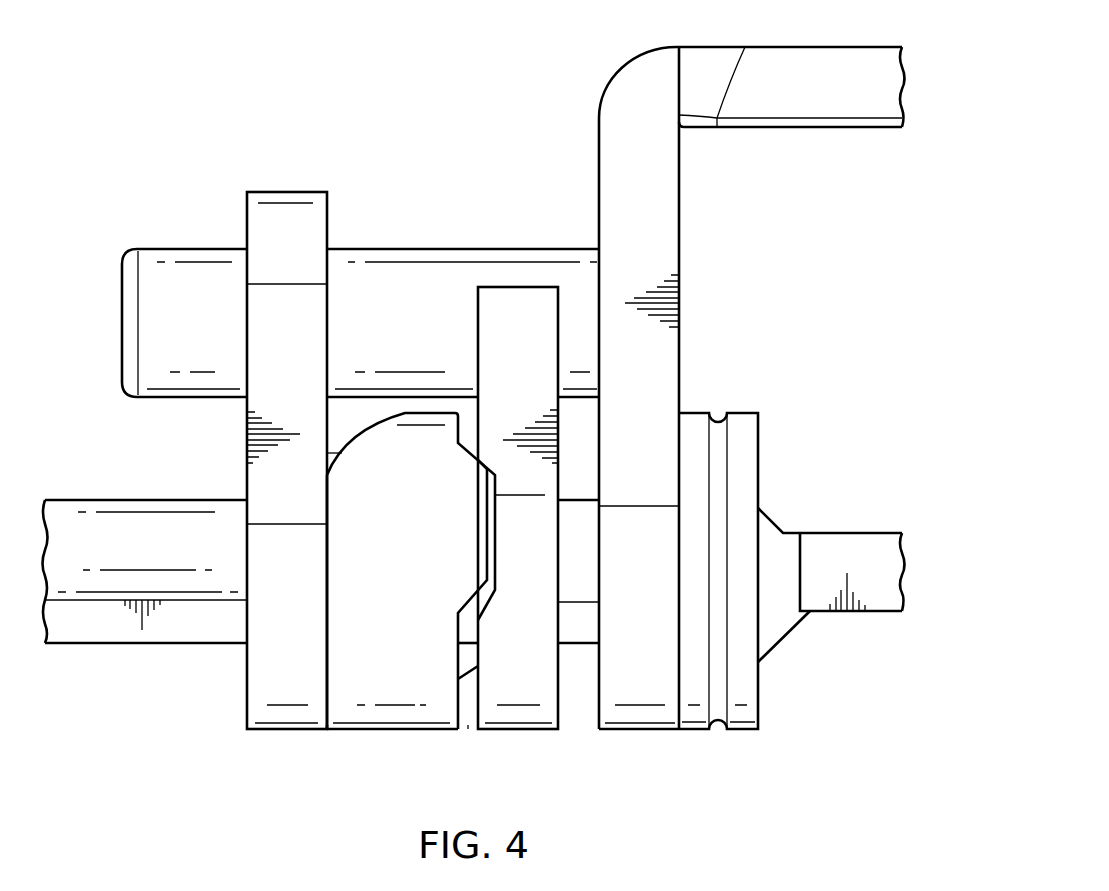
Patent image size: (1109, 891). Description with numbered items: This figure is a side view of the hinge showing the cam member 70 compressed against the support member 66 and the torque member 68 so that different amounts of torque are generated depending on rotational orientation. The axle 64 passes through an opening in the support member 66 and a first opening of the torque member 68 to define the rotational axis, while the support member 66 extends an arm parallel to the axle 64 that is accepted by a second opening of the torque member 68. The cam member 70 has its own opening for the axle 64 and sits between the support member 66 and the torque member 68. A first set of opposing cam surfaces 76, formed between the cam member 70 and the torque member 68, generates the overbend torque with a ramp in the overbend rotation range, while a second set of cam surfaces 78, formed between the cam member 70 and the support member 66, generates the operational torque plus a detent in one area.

The axle 64 is at (112, 645).
The support member 66 is at (517, 732).
The torque member 68 is at (287, 732).
The cam member 70 is at (392, 732).
The first set of opposing cam surfaces 76 is at (325, 733).
The second set of cam surfaces 78 is at (470, 733).